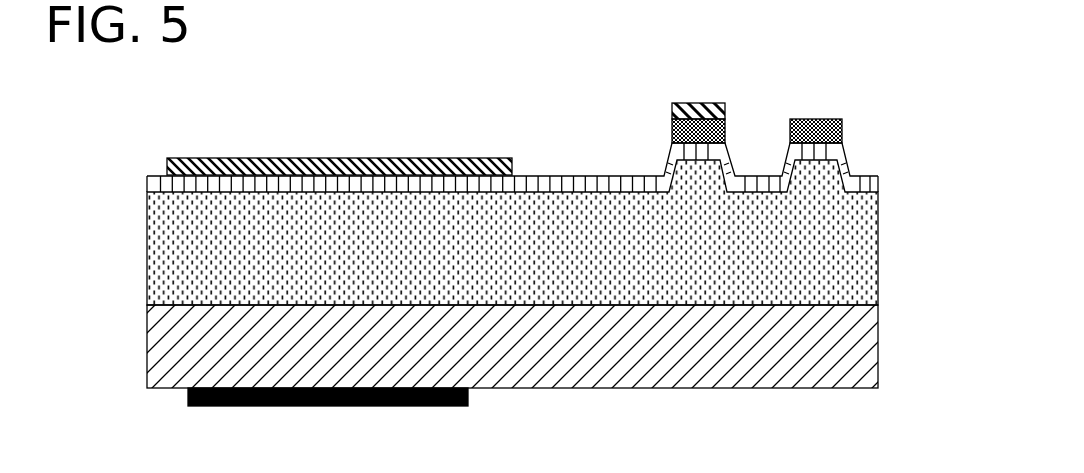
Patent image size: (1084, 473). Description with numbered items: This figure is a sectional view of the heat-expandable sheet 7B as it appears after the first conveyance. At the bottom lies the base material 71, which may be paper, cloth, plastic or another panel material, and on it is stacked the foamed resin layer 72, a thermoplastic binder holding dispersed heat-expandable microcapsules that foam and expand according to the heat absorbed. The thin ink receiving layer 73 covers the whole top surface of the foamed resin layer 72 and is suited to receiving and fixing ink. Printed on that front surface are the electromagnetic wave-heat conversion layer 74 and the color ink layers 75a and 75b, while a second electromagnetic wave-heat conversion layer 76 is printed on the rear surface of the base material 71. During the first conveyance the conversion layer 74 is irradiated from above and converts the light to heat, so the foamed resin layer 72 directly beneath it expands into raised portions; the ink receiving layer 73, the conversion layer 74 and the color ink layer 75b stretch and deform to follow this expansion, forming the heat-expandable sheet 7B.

The base material 71 is at (863, 348).
The foamed resin layer 72 is at (863, 250).
The ink receiving layer 73 is at (863, 183).
The electromagnetic wave-heat conversion layer 74 is at (672, 131).
The color ink layer 75a is at (348, 158).
The color ink layer 75b is at (700, 103).
The electromagnetic wave-heat conversion layer 76 is at (343, 407).
The heat-expandable sheet 7B is at (794, 77).